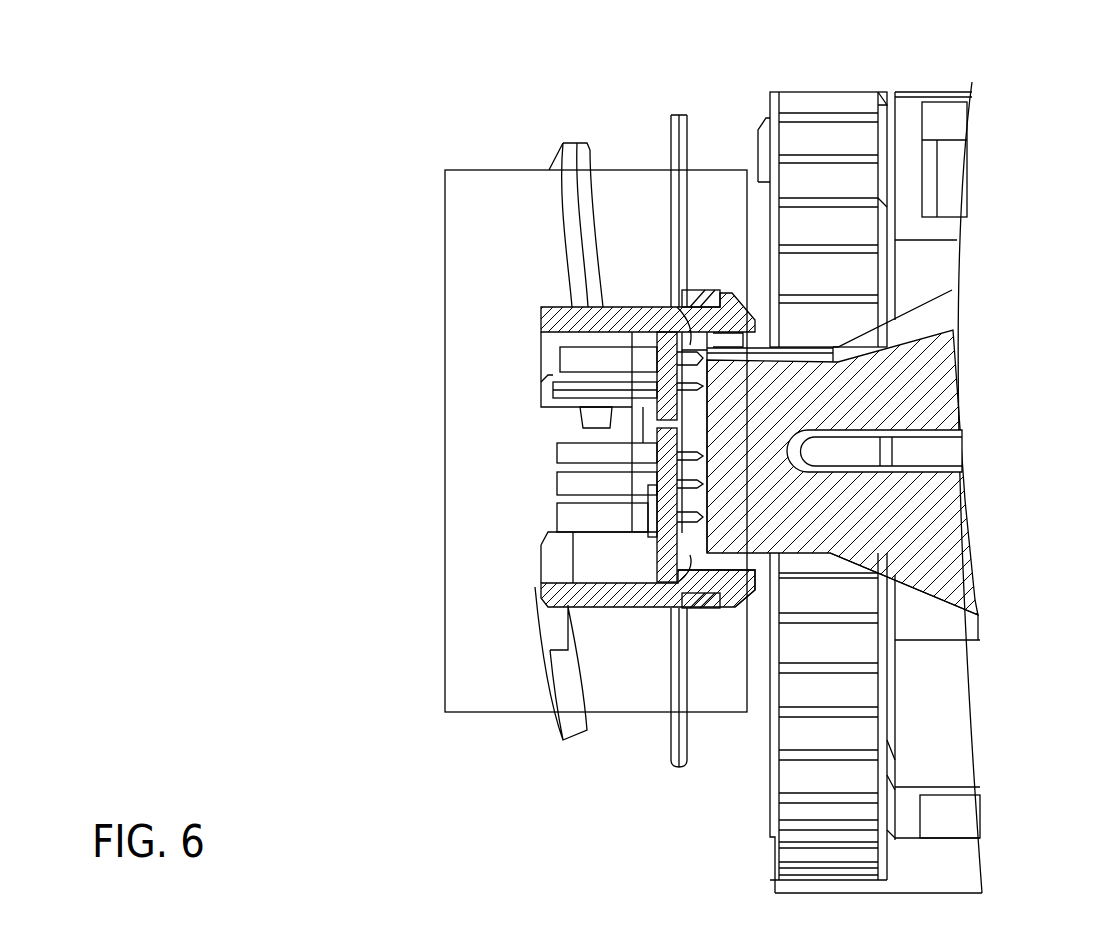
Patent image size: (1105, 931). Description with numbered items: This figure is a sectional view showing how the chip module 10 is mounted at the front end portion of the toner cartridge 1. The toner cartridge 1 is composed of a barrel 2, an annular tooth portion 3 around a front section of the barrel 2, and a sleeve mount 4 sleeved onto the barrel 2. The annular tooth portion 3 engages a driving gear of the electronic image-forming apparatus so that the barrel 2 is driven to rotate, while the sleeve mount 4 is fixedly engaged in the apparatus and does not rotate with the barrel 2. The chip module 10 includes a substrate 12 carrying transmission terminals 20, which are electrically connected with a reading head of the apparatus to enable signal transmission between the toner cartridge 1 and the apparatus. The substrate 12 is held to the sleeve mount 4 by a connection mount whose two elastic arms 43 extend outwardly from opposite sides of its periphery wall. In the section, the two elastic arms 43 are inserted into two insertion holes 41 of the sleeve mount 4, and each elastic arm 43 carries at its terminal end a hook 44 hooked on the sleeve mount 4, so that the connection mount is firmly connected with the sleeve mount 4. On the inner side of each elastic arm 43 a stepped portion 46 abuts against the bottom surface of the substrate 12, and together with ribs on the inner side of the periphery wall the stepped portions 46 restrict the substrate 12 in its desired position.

The toner cartridge 1 is at (935, 82).
The barrel 2 is at (502, 195).
The annular tooth portion 3 is at (805, 135).
The sleeve mount 4 is at (905, 385).
The chip module 10 is at (520, 543).
The substrate 12 is at (668, 575).
The transmission terminals 20 is at (573, 358).
The insertion holes 41 is at (703, 300).
The elastic arms 43 is at (707, 600).
The hook 44 is at (733, 607).
The stepped portion 46 is at (690, 342).